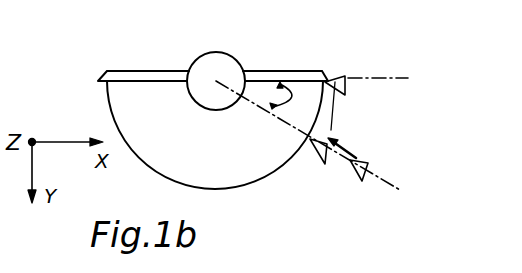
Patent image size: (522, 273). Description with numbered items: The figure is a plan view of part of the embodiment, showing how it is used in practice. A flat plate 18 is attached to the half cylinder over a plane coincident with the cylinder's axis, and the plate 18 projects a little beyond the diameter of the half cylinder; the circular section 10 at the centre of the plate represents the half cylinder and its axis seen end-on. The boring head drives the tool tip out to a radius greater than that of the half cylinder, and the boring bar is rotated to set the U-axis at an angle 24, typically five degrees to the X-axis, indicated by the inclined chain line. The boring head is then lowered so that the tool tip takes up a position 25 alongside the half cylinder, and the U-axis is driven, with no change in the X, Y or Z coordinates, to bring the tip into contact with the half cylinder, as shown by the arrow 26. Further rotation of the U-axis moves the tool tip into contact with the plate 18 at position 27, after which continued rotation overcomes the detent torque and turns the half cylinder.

The flat plate 18 is at (158, 76).
The ball 10 is at (217, 62).
The angle 24 is at (298, 87).
The position 27 is at (346, 77).
The position 25 is at (366, 161).
The direction arrow 26 is at (318, 156).